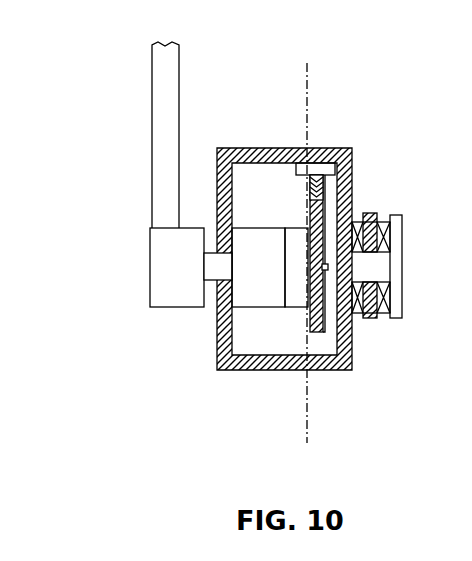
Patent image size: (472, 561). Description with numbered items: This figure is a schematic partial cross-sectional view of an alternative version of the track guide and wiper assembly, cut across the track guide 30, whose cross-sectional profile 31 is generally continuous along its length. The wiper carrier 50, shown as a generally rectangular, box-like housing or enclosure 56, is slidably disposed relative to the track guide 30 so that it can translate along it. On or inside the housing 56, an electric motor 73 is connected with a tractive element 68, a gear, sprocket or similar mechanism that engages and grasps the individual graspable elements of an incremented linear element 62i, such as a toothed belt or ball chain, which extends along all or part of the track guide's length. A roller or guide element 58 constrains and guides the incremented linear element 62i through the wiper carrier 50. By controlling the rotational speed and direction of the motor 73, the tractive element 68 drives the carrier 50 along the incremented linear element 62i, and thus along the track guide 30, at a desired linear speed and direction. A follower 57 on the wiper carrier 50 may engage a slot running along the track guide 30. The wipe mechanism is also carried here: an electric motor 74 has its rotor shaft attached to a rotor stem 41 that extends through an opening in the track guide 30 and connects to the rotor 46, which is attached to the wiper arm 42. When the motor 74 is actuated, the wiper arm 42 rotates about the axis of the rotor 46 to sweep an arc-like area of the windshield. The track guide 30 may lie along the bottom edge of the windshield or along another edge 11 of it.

The edge of the windshield 11 is at (307, 63).
The track guide 30 is at (401, 267).
The cross-sectional shape/profile 31 is at (370, 213).
The rotor stem 41 is at (212, 267).
The wiper arm 42 is at (162, 107).
The rotor 46 is at (150, 255).
The wiper carrier 50 is at (277, 221).
The housing 56 is at (257, 148).
The follower 57 is at (393, 267).
The guide element 58 is at (322, 168).
The incremented linear element 62i is at (325, 185).
The tractive element 68 is at (310, 312).
The electric motor 73 is at (297, 233).
The electric motor 74 is at (272, 282).